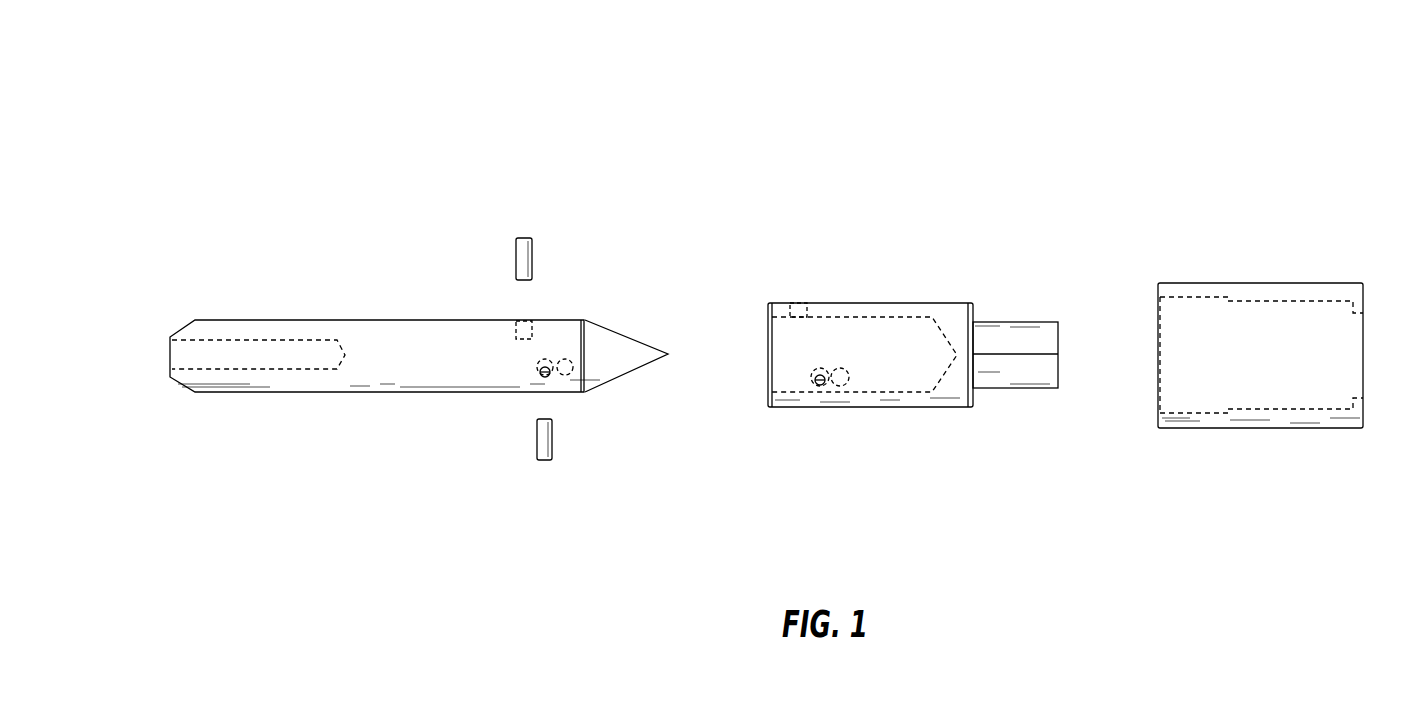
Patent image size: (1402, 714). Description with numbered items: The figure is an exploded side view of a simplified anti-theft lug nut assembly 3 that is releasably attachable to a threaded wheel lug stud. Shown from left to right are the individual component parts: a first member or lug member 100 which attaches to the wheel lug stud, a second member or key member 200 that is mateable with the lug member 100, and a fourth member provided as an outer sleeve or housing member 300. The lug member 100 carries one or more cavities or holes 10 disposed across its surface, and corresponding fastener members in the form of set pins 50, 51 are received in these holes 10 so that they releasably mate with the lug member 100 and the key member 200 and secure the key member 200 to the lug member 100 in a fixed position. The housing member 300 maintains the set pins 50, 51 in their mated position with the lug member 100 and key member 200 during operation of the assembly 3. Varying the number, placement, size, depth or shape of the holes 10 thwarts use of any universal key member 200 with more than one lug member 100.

The lug nut assembly 3 is at (320, 92).
The holes 10 is at (525, 321).
The set pin 50 is at (516, 262).
The set pin 51 is at (535, 438).
The lug member 100 is at (262, 320).
The key member 200 is at (867, 302).
The housing member 300 is at (1262, 283).